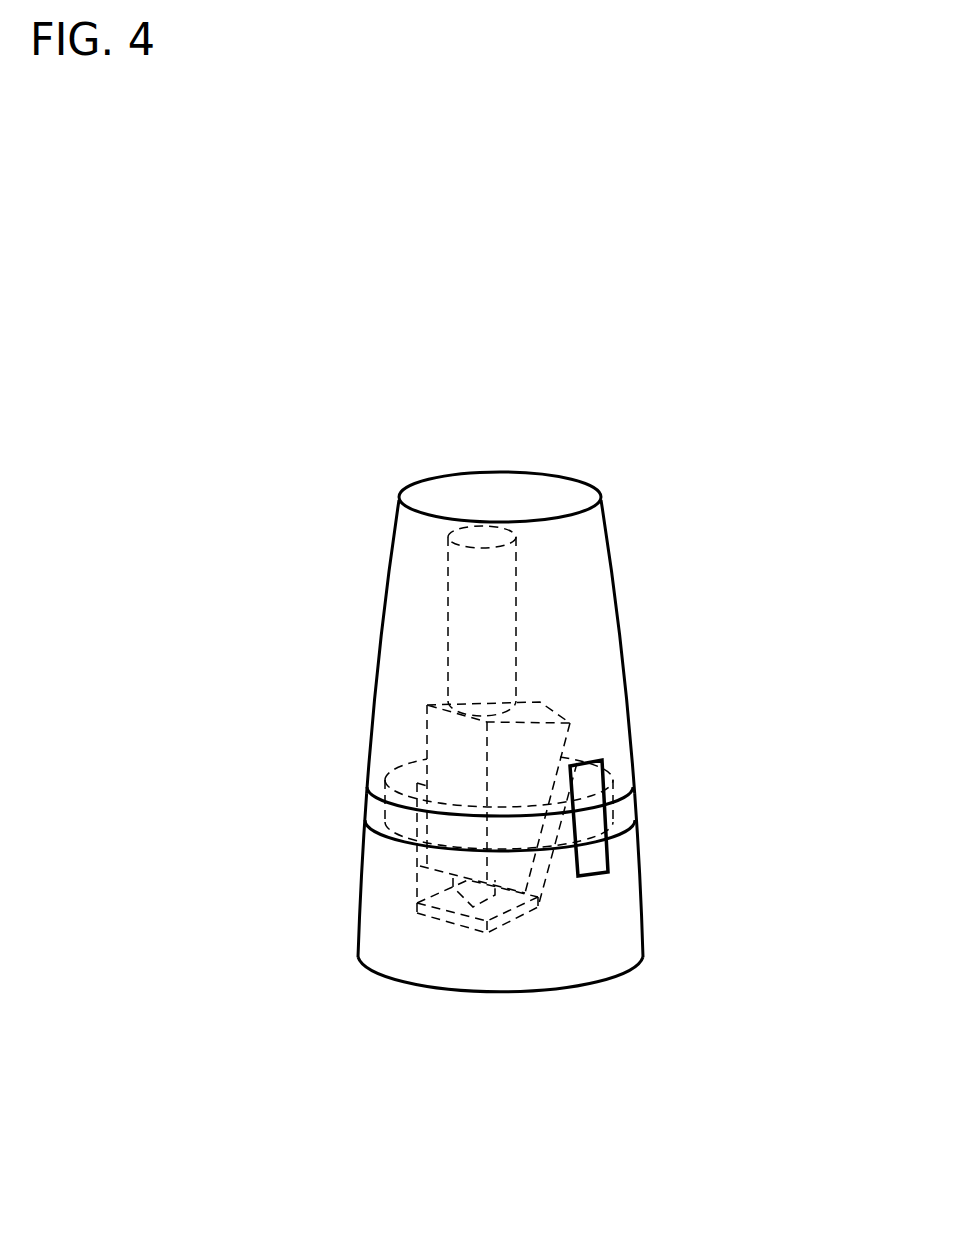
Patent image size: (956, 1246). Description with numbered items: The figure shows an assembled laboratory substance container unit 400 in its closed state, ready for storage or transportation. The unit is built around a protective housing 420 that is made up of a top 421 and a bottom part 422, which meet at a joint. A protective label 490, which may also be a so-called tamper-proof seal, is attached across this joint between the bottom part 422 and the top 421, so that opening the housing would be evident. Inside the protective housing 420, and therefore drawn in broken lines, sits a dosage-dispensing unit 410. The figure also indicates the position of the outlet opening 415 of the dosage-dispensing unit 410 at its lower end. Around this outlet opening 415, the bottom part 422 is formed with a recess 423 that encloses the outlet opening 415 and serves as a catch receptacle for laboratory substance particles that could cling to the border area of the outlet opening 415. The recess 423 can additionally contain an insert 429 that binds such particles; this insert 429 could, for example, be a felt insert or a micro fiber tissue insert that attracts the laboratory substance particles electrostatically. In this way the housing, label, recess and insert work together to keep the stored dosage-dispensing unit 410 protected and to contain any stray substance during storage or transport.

The laboratory substance container unit 400 is at (424, 440).
The protective housing 420 is at (318, 705).
The top 421 is at (563, 633).
The bottom part 422 is at (575, 917).
The dosage-dispensing unit 410 is at (537, 750).
The recess 423 is at (418, 885).
The insert 429 is at (498, 925).
The outlet opening 415 is at (464, 922).
The protective label 490 is at (592, 853).